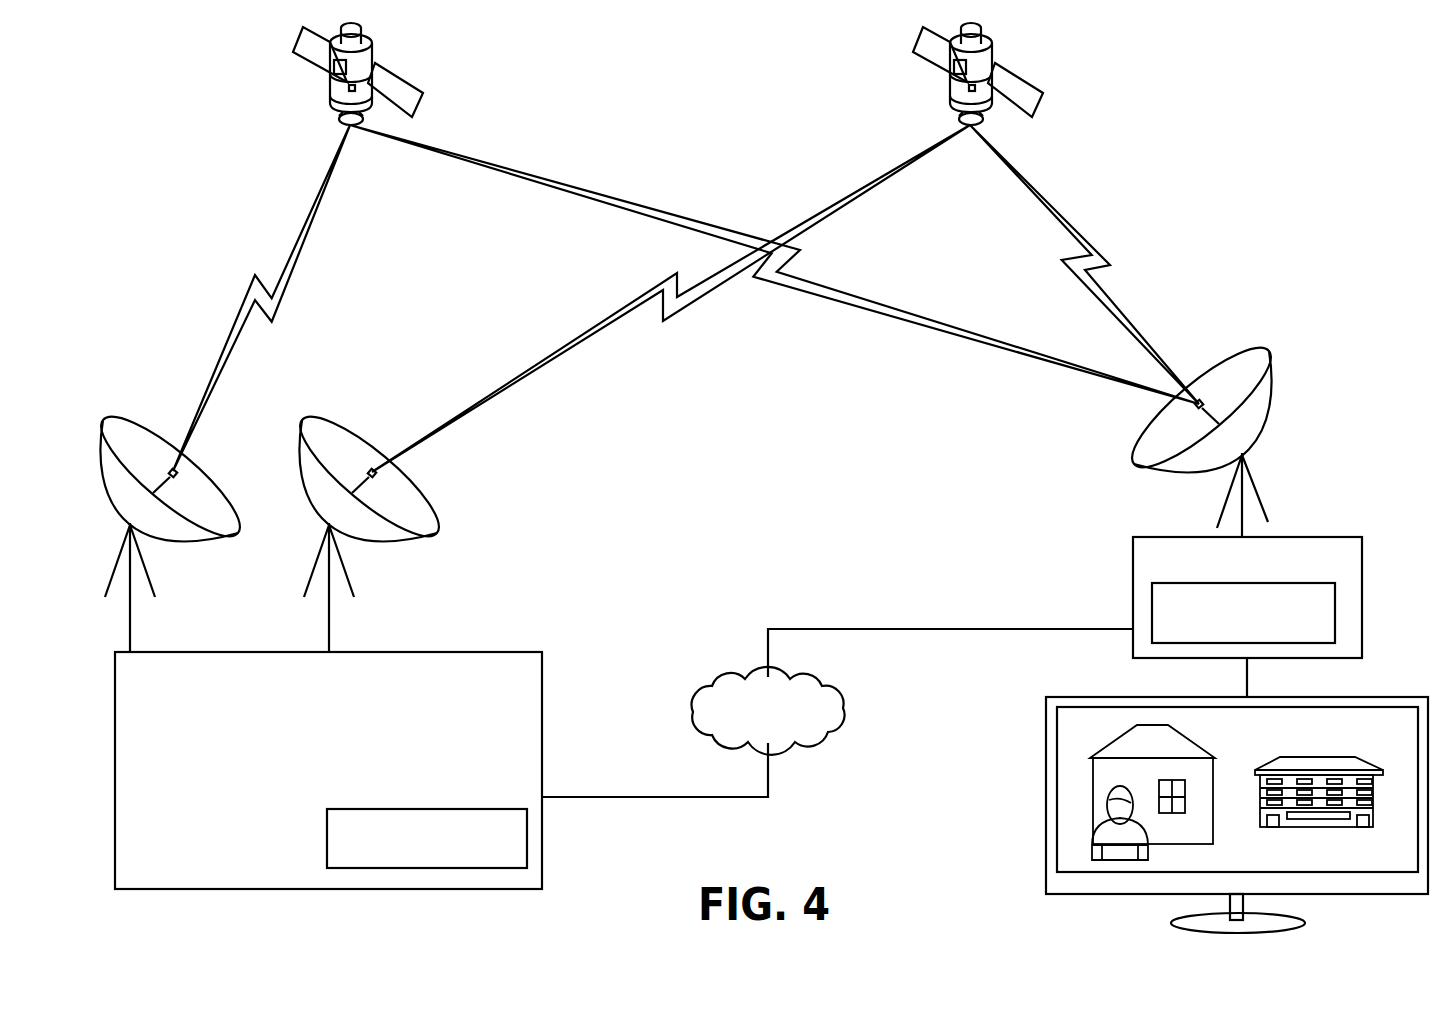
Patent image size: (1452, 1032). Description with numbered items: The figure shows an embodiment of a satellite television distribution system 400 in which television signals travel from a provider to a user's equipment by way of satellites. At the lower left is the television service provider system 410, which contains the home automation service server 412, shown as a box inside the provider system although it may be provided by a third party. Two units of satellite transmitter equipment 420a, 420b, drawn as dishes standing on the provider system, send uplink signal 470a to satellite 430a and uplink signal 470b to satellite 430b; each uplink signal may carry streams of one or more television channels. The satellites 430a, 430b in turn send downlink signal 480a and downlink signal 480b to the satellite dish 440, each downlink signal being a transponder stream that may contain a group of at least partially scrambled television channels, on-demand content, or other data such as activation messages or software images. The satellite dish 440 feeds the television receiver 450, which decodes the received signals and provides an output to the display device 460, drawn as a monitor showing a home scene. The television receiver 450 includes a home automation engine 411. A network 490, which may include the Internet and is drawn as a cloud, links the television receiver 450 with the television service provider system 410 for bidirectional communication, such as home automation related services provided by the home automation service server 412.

The satellite television distribution system 400 is at (191, 106).
The television service provider system 410 is at (328, 744).
The home automation engine 411 is at (1243, 613).
The home automation service server 412 is at (427, 838).
The satellite transmitter equipment 420a is at (120, 420).
The satellite transmitter equipment 420b is at (314, 421).
The satellite 430a is at (411, 86).
The satellite 430b is at (1041, 86).
The satellite dish 440 is at (1248, 351).
The television receiver 450 is at (1247, 574).
The display device 460 is at (1396, 697).
The uplink signal 470a is at (821, 212).
The uplink signal 470b is at (306, 231).
The downlink signal 480a is at (534, 173).
The downlink signal 480b is at (1056, 212).
The network 490 is at (697, 686).